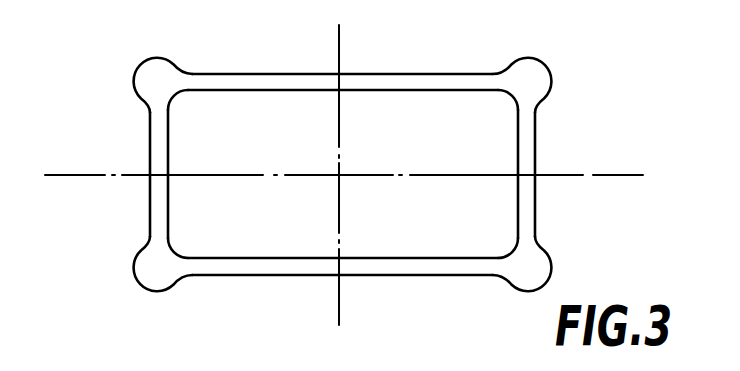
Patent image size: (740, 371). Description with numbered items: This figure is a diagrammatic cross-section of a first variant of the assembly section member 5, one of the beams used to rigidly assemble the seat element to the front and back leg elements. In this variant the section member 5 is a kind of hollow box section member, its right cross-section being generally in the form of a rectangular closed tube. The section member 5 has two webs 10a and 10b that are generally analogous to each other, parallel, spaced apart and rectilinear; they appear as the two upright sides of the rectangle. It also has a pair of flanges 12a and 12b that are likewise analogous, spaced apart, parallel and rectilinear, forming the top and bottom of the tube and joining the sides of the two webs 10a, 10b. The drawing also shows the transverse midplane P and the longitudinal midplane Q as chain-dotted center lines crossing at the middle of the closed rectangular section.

The assembly section member 5 is at (200, 293).
The web 10a is at (150, 135).
The web 10b is at (535, 140).
The flange 12a is at (390, 80).
The flange 12b is at (432, 277).
The transverse midplane P is at (436, 146).
The longitudinal midplane Q is at (340, 58).